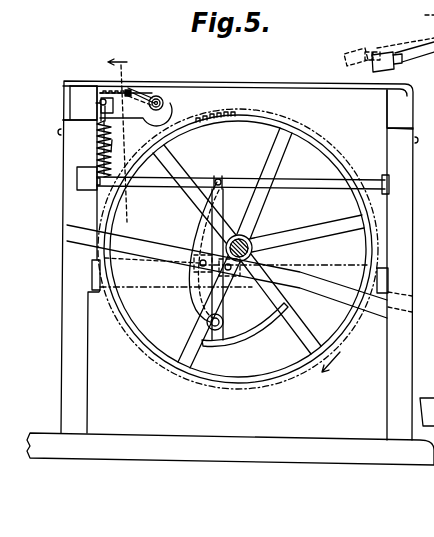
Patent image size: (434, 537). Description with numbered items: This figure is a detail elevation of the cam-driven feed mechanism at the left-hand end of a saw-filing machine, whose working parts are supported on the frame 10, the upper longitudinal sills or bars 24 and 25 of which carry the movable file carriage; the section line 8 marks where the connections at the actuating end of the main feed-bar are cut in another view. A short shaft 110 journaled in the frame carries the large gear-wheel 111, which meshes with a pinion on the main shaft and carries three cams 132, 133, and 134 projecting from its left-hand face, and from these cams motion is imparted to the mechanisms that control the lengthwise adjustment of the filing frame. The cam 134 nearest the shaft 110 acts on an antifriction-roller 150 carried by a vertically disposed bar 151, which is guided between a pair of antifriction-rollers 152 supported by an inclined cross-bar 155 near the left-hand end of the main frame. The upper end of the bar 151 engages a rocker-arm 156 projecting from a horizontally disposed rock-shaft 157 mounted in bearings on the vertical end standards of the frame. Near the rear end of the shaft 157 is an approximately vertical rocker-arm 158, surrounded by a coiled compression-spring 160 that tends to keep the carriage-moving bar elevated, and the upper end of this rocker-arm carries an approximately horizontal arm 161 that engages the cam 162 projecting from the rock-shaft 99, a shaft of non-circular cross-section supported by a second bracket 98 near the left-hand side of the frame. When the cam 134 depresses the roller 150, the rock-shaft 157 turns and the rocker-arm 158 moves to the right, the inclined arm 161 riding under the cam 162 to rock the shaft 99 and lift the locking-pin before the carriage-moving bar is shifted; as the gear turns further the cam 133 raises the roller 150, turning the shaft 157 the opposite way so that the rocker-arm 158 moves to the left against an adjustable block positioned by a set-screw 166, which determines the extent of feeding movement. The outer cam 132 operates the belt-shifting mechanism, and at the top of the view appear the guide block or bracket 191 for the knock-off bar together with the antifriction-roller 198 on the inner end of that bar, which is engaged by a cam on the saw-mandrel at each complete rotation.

The section line 8 is at (119, 133).
The frame 10 is at (80, 396).
The longitudinal sill 24 is at (76, 103).
The longitudinal sill 25 is at (399, 111).
The second bracket 98 is at (136, 115).
The rock-shaft 99 is at (164, 102).
The short shaft 110 is at (256, 237).
The gear-wheel 111 is at (215, 375).
The outer cam 132 is at (285, 358).
The cam 133 is at (261, 326).
The cam 134 is at (210, 224).
The antifriction-roller 150 is at (224, 321).
The vertically-disposed bar 151 is at (209, 292).
The antifriction-rollers 152 is at (196, 271).
The inclined cross-bar 155 is at (322, 287).
The rocker-arm 156 is at (220, 188).
The rock-shaft 157 is at (295, 182).
The rocker-arm 158 is at (97, 144).
The coiled compression-spring 160 is at (118, 146).
The horizontal arm 161 is at (129, 90).
The cam 162 is at (144, 88).
The set-screw 166 is at (100, 109).
The guide block 191 is at (405, 38).
The antifriction-roller 198 is at (378, 65).